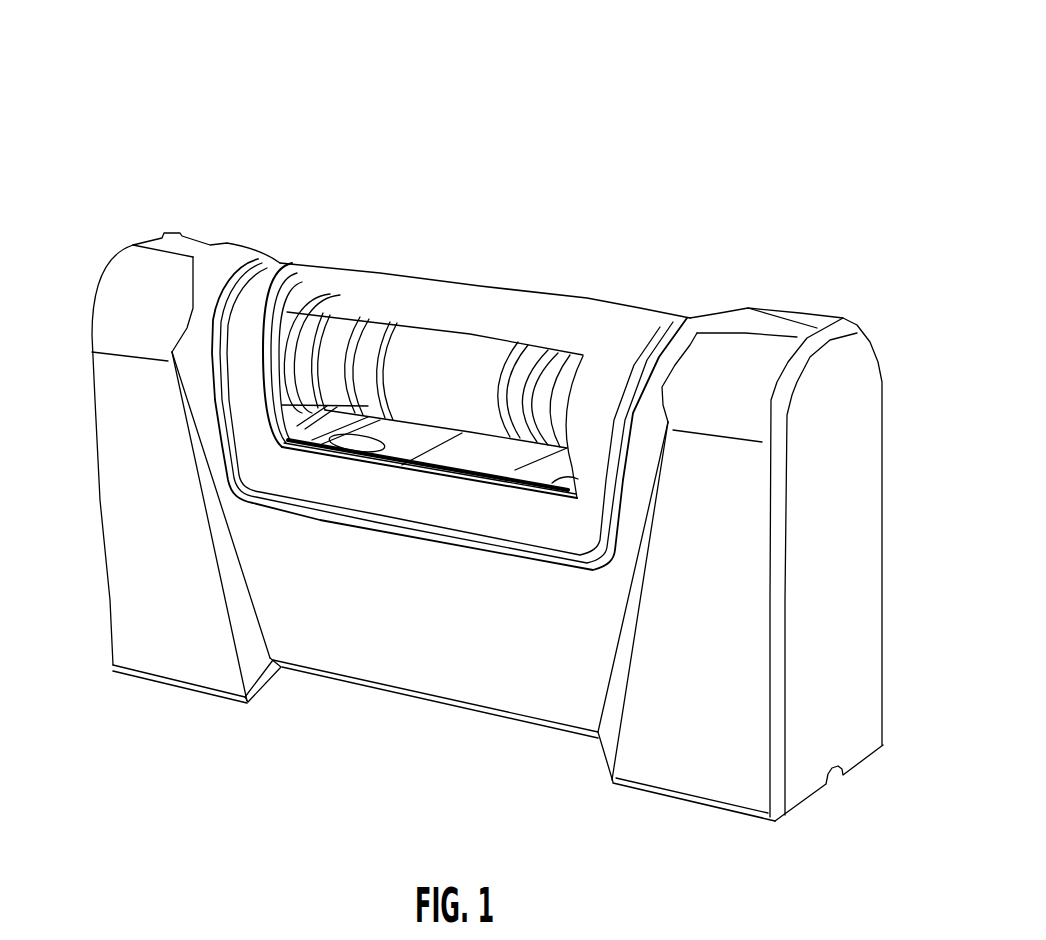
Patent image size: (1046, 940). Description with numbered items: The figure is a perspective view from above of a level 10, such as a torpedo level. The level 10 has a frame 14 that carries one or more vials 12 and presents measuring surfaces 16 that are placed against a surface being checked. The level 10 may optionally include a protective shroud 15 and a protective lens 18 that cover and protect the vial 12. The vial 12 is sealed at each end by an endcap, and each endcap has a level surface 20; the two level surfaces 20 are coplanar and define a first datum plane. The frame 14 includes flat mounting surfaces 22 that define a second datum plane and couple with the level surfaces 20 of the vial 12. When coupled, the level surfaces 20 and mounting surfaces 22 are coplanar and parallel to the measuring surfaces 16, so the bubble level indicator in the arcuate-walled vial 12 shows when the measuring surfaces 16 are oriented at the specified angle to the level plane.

The level 10 is at (557, 93).
The vial 12 is at (555, 363).
The frame 14 is at (853, 435).
The protective shroud 15 is at (287, 277).
The measuring surfaces 16 is at (146, 678).
The protective lens 18 is at (458, 287).
The level surface 20 is at (325, 423).
The flat mounting surface 22 is at (286, 440).